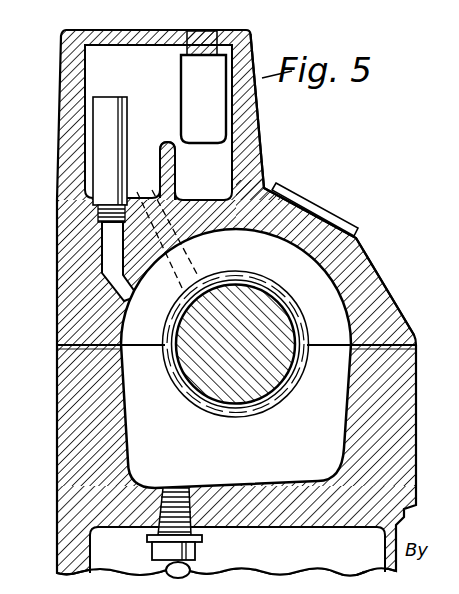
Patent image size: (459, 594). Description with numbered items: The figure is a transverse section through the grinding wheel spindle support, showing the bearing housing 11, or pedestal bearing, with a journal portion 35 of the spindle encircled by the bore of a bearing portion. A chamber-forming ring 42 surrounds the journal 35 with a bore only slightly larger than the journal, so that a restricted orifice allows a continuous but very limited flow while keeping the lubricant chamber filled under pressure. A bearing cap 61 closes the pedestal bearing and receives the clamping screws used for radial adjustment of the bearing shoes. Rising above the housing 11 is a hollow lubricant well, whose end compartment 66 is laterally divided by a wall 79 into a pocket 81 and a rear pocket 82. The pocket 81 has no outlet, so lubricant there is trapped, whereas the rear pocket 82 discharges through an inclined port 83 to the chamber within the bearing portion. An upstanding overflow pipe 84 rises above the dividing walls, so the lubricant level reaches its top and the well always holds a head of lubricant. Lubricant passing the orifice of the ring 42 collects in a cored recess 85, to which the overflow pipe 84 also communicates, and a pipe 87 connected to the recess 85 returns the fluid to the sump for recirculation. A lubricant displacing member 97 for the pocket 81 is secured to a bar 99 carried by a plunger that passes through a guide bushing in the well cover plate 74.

The bearing housing 11 is at (407, 422).
The journal portion 35 is at (258, 312).
The ring 42 is at (266, 279).
The bearing cap 61 is at (397, 315).
The transverse compartment 66 is at (95, 62).
The well cover plate 74 is at (77, 24).
The wall 79 is at (177, 177).
The pocket 81 is at (255, 157).
The rear pocket 82 is at (90, 152).
The inclined port 83 is at (187, 259).
The overflow pipe 84 is at (113, 117).
The cored recess 85 is at (132, 413).
The pipe 87 is at (197, 552).
The lubricant displacing member 97 is at (192, 80).
The bar 99 is at (201, 33).